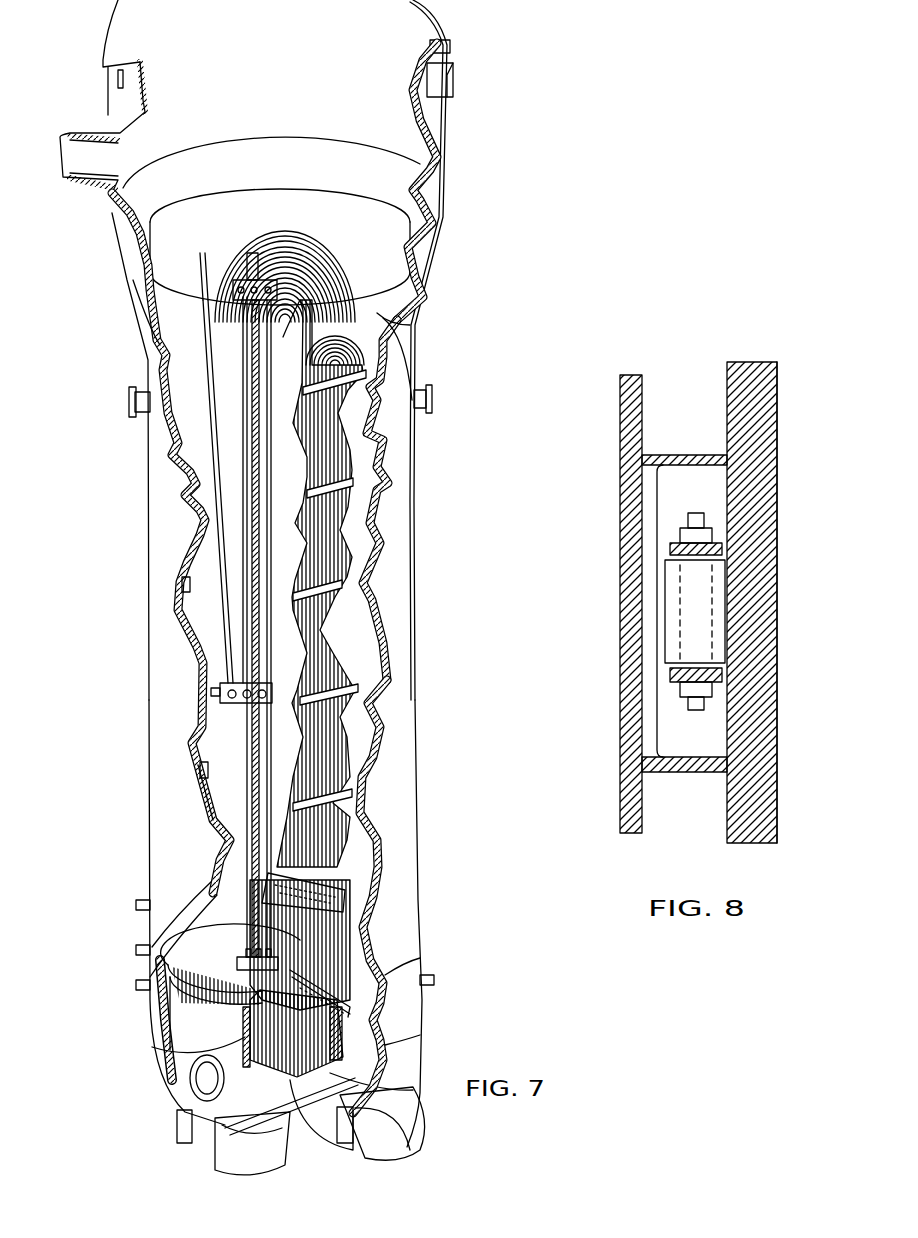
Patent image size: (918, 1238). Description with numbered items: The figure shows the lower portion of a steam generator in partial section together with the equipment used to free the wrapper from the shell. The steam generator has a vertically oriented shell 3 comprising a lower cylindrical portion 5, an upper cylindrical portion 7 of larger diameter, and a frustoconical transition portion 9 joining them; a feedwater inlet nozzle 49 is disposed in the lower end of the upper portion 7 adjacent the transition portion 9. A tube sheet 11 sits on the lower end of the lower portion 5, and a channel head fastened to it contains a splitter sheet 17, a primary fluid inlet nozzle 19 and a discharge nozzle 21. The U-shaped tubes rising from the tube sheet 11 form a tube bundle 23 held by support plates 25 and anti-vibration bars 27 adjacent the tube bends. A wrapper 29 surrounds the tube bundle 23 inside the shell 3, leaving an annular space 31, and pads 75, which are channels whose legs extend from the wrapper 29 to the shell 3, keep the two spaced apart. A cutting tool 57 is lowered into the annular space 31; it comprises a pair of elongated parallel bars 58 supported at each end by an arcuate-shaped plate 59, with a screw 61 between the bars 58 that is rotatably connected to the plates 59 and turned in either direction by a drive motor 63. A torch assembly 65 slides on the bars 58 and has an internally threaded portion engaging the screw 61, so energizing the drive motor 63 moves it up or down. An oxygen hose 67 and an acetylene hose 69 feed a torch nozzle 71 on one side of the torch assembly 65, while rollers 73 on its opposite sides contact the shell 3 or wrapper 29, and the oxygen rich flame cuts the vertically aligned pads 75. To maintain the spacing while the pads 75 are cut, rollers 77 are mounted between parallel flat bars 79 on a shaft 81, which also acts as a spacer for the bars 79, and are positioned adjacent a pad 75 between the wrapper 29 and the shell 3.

In FIG. 7, the shell 3 is at (150, 722).
In FIG. 8, the shell 3 is at (772, 650).
In FIG. 7, the lower cylindrical portion 5 is at (134, 680).
In FIG. 8, the lower cylindrical portion 5 is at (775, 490).
In FIG. 7, the upper cylindrical portion 7 is at (440, 125).
In FIG. 7, the frustoconical transition portion 9 is at (427, 256).
In FIG. 7, the tube sheet 11 is at (227, 1040).
In FIG. 7, the splitter sheet 17 is at (305, 1105).
In FIG. 7, the primary fluid inlet nozzle 19 is at (245, 1160).
In FIG. 7, the discharge nozzle 21 is at (400, 1152).
In FIG. 7, the tube bundle 23 is at (352, 815).
In FIG. 7, the support plates 25 is at (372, 470).
In FIG. 7, the anti-vibration bars 27 is at (322, 242).
In FIG. 7, the wrapper 29 is at (235, 822).
In FIG. 8, the wrapper 29 is at (625, 535).
In FIG. 7, the annular space 31 is at (208, 805).
In FIG. 7, the feedwater inlet nozzle 49 is at (75, 176).
In FIG. 7, the cutting tool 57 is at (240, 497).
In FIG. 7, the elongated parallel bars 58 is at (252, 392).
In FIG. 7, the arcuate-shaped plate 59 is at (241, 960).
In FIG. 7, the screw 61 is at (266, 878).
In FIG. 7, the drive motor 63 is at (255, 254).
In FIG. 7, the torch assembly 65 is at (280, 688).
In FIG. 7, the oxygen hose 67 is at (208, 316).
In FIG. 7, the acetylene hose 69 is at (212, 258).
In FIG. 7, the torch nozzle 71 is at (212, 690).
In FIG. 7, the rollers 73 is at (232, 700).
In FIG. 7, the pads 75 is at (181, 579).
In FIG. 8, the pads 75 is at (663, 458).
In FIG. 8, the rollers 77 is at (715, 600).
In FIG. 8, the flat bars 79 is at (673, 542).
In FIG. 8, the shaft 81 is at (696, 514).